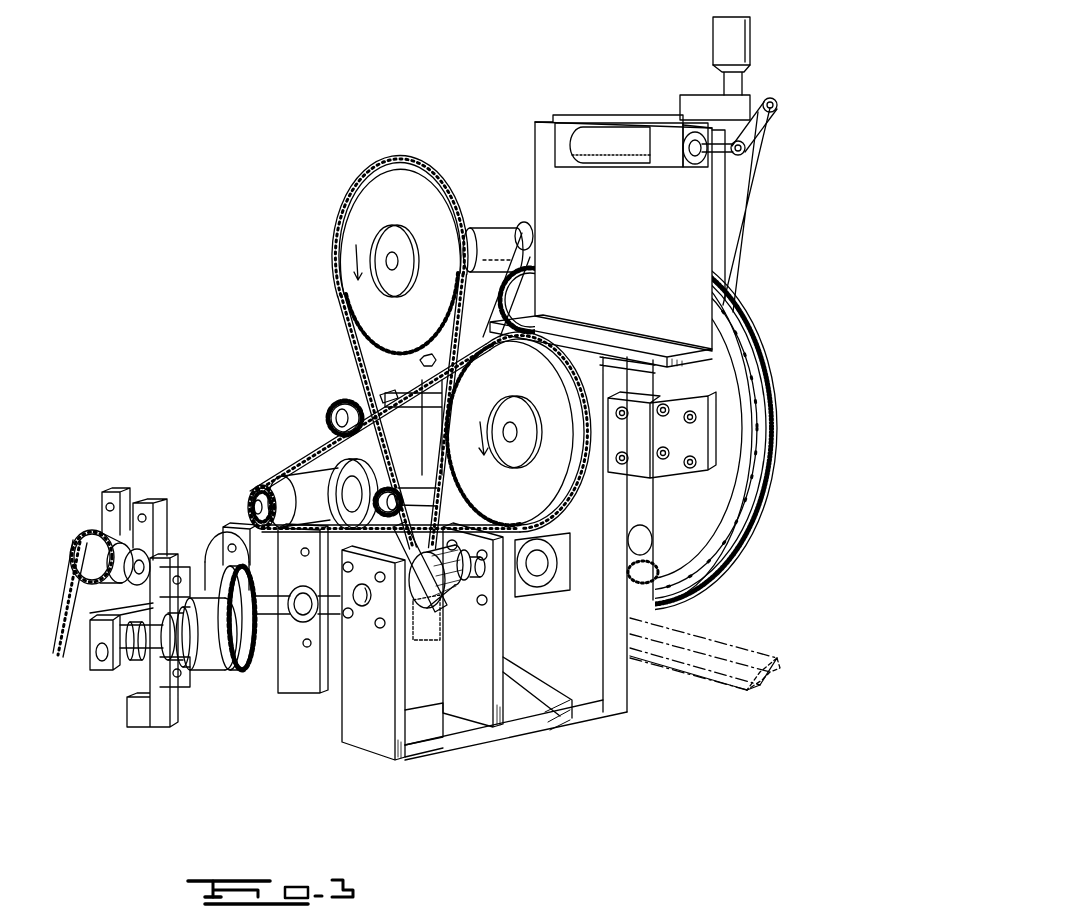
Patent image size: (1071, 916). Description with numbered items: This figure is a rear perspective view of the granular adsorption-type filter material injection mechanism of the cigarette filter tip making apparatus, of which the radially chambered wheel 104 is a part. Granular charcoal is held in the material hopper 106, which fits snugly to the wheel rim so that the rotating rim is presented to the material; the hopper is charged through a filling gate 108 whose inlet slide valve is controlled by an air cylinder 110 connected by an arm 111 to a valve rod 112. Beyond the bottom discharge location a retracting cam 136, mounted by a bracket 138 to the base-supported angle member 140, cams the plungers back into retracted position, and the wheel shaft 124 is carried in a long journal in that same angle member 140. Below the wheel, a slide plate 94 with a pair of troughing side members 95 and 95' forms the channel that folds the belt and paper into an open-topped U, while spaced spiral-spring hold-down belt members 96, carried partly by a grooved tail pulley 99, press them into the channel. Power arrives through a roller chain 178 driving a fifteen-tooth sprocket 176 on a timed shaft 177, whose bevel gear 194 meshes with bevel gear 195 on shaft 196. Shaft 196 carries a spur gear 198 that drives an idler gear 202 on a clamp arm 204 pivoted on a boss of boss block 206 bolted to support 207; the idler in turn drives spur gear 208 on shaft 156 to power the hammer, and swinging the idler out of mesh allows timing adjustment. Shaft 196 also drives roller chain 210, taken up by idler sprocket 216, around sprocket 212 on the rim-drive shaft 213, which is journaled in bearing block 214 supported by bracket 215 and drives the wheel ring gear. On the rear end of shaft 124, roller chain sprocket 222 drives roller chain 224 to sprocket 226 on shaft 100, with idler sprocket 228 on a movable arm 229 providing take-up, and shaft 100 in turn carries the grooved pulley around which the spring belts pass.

The slide plate 94 is at (778, 686).
The troughing side member 95 is at (779, 670).
The troughing side member 95' is at (710, 682).
The hold-down belt members 96 is at (424, 478).
The grooved tail pulley 99 is at (345, 470).
The shaft 100 is at (250, 500).
The radially chambered wheel 104 is at (767, 512).
The material hopper 106 is at (531, 164).
The filling gate 108 is at (745, 42).
The air cylinder 110 is at (624, 152).
The arm 111 is at (753, 125).
The valve rod 112 is at (777, 104).
The shaft 124 is at (512, 432).
The retracting cam 136 is at (700, 562).
The bracket 138 is at (662, 460).
The angle member 140 is at (592, 712).
The shaft 156 is at (362, 604).
The sprocket 176 is at (70, 550).
The shaft 177 is at (150, 556).
The roller chain 178 is at (66, 588).
The bevel gear 194 is at (213, 560).
The bevel gear 195 is at (225, 660).
The shaft 196 is at (255, 670).
The spur gear 198 is at (332, 652).
The idler gear 202 is at (435, 640).
The clamp arm 204 is at (440, 620).
The boss block 206 is at (416, 640).
The support 207 is at (422, 641).
The spur gear 208 is at (447, 605).
The roller chain 210 is at (357, 358).
The sprocket 212 is at (400, 261).
The rim-drive shaft 213 is at (394, 260).
The bearing block 214 is at (497, 243).
The bracket 215 is at (420, 364).
The idler sprocket 216 is at (350, 498).
The roller chain sprocket 222 is at (510, 433).
The roller chain 224 is at (308, 468).
The sprocket 226 is at (265, 486).
The idler sprocket 228 is at (330, 408).
The movable arm 229 is at (388, 406).